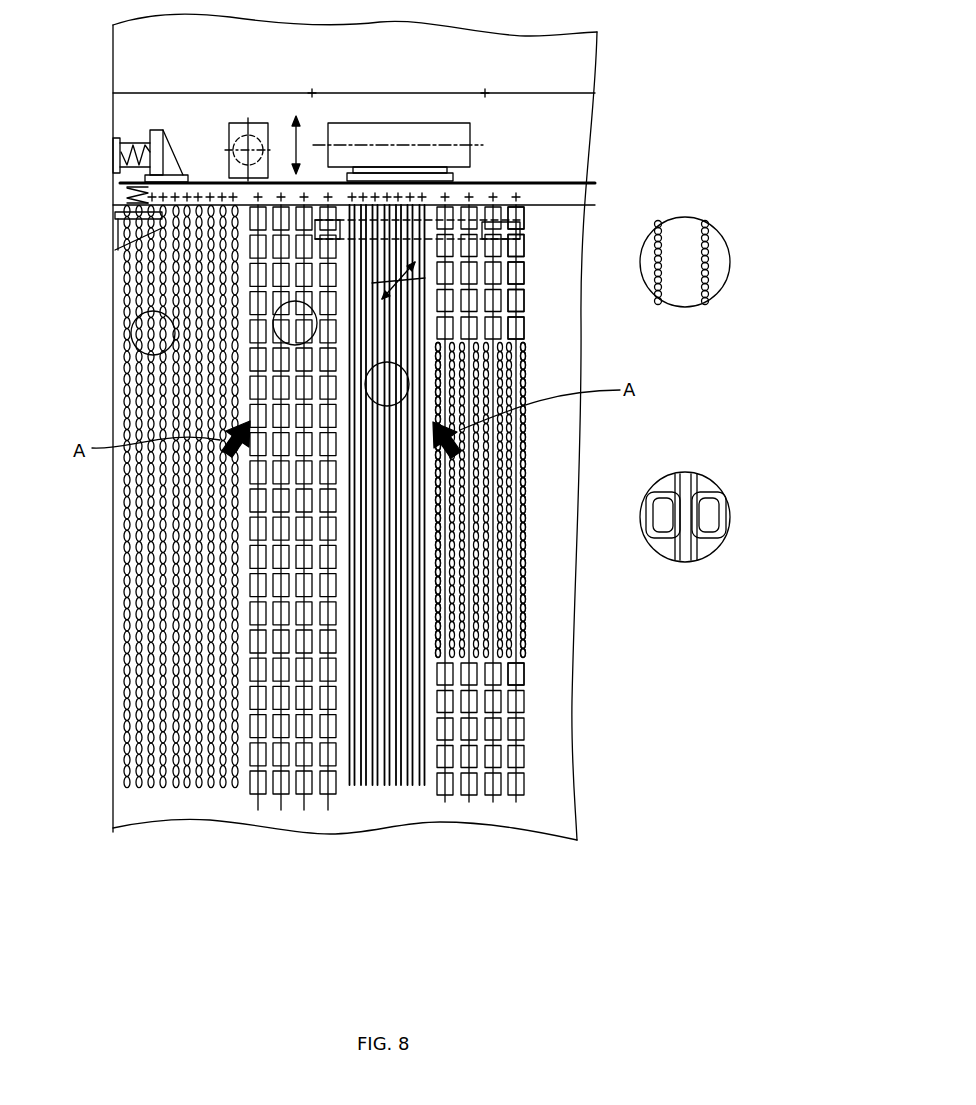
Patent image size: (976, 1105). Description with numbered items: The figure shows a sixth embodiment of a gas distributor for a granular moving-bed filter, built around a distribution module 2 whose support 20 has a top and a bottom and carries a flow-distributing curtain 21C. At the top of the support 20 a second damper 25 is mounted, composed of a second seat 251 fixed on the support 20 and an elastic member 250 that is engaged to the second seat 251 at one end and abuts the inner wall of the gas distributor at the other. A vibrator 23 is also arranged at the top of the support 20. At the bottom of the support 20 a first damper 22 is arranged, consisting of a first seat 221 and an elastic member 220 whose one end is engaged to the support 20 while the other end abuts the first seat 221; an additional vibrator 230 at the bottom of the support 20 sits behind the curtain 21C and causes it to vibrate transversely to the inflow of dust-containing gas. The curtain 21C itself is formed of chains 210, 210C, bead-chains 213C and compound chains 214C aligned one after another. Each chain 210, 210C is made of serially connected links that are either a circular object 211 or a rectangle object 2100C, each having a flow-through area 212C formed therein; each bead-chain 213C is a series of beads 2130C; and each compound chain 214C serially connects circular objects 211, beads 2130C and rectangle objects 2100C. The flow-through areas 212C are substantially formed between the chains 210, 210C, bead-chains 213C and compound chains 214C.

The distribution module 2 is at (207, 152).
The support 20 is at (512, 188).
The first damper 22 is at (93, 218).
The elastic member 220 is at (127, 197).
The first seat 221 is at (160, 217).
The vibrator 23 is at (393, 137).
The second damper 25 is at (108, 97).
The elastic member 250 is at (130, 145).
The second seat 251 is at (155, 135).
The vibrator 230 is at (467, 237).
The chain 210 is at (160, 789).
The chain 210C is at (307, 792).
The bead-chain 213C is at (375, 788).
The compound chain 214C is at (519, 792).
The flow-distributing curtain 21C is at (524, 424).
The circular object 211 is at (520, 600).
The flow-through area 212C is at (433, 497).
The bead 2130C is at (717, 297).
The rectangle object 2100C is at (727, 515).